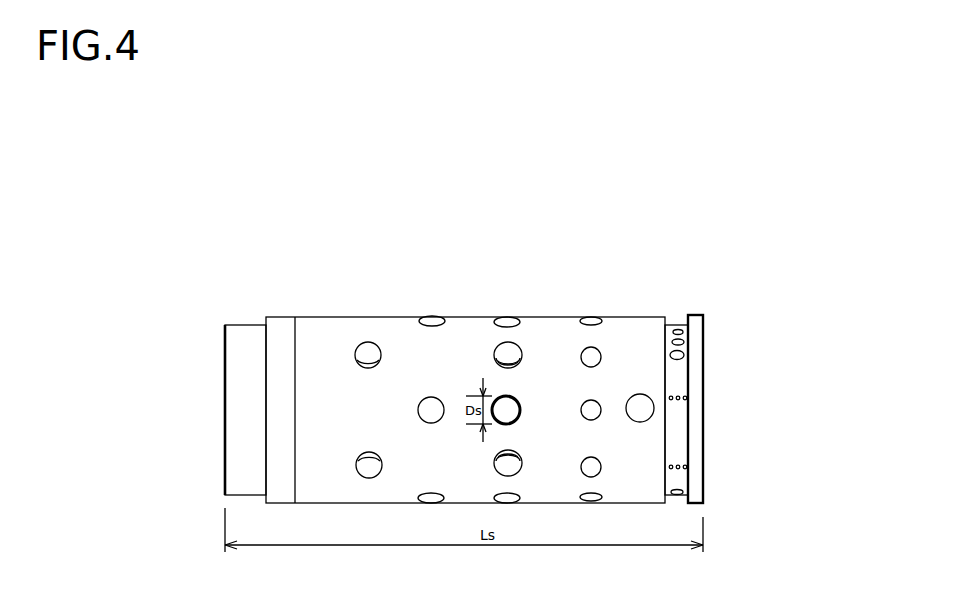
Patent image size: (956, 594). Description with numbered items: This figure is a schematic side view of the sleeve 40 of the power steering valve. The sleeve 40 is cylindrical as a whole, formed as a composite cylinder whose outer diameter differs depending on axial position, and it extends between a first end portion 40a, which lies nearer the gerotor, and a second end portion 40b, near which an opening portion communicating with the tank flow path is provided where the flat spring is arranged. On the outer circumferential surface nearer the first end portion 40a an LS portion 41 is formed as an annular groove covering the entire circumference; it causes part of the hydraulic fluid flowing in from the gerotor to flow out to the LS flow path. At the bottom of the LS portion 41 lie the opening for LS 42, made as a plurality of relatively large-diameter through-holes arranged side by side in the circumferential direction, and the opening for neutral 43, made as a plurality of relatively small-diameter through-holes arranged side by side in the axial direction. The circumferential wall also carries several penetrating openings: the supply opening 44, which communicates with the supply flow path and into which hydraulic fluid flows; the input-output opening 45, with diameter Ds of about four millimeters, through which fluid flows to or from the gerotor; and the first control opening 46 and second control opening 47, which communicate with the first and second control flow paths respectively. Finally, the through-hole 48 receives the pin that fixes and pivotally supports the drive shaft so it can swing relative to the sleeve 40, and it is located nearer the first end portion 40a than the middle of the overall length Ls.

The sleeve 40 is at (696, 261).
The first end portion 40a is at (706, 314).
The second end portion 40b is at (224, 323).
The LS portion 41 is at (678, 323).
The opening for LS 42 is at (685, 353).
The opening for neutral 43 is at (673, 397).
The supply opening 44 is at (597, 493).
The input-output opening 45 is at (503, 497).
The first control opening 46 is at (432, 497).
The second control opening 47 is at (366, 462).
The through-hole 48 is at (640, 406).